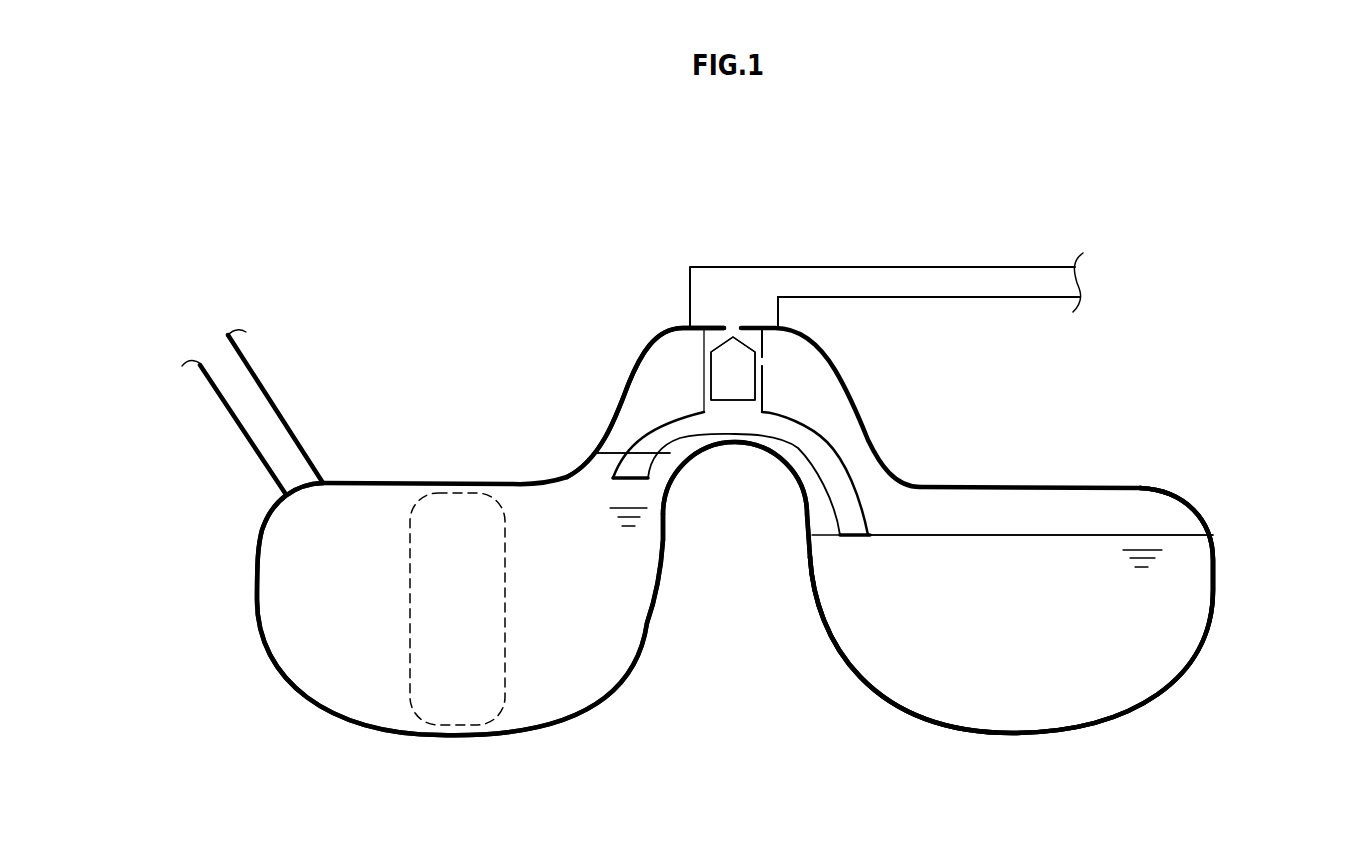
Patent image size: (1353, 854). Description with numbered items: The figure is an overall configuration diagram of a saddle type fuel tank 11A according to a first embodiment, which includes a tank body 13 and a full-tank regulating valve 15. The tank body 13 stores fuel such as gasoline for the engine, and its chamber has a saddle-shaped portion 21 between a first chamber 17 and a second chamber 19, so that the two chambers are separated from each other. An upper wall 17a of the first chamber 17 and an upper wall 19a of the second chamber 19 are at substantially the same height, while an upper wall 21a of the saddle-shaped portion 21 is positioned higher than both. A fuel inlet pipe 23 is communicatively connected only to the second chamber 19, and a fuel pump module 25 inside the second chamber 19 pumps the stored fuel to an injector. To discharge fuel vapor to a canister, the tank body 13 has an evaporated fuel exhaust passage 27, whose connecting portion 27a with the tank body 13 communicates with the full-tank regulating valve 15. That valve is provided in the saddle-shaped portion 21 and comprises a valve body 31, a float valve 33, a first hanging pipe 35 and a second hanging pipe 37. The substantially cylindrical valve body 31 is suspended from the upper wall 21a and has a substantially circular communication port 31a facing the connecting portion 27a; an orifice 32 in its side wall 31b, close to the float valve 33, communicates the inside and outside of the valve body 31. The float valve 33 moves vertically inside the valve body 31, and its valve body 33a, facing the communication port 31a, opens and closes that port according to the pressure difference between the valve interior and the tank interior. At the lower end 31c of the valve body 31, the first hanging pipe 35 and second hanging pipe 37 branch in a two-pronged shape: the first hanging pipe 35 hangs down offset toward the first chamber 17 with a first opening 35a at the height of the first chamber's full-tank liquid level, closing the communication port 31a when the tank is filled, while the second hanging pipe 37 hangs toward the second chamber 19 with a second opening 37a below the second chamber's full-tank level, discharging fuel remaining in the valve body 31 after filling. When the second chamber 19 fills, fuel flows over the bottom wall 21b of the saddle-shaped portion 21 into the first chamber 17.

The saddle type fuel tank 11A is at (452, 232).
The tank body 13 is at (1121, 359).
The full-tank regulating valve 15 is at (662, 356).
The first chamber 17 is at (1123, 503).
The upper wall of the first chamber 17a is at (1088, 487).
The second chamber 19 is at (350, 500).
The upper wall of the second chamber 19a is at (393, 483).
The saddle-shaped portion 21 is at (770, 408).
The upper wall of the saddle-shaped portion 21a is at (760, 326).
The bottom wall of the saddle-shaped portion 21b is at (745, 437).
The fuel inlet pipe 23 is at (240, 375).
The fuel pump module 25 is at (447, 493).
The evaporated fuel exhaust passage 27 is at (922, 283).
The connecting portion 27a is at (778, 328).
The valve body 31 is at (700, 380).
The communication port 31a is at (724, 322).
The side wall of the valve body 31b is at (767, 376).
The lower end of the valve body 31c is at (773, 393).
The orifice 32 is at (780, 362).
The float valve 33 is at (722, 366).
The valve body of the float valve 33a is at (733, 337).
The first hanging pipe 35 is at (805, 438).
The first opening 35a is at (862, 537).
The second hanging pipe 37 is at (657, 440).
The second opening 37a is at (613, 478).